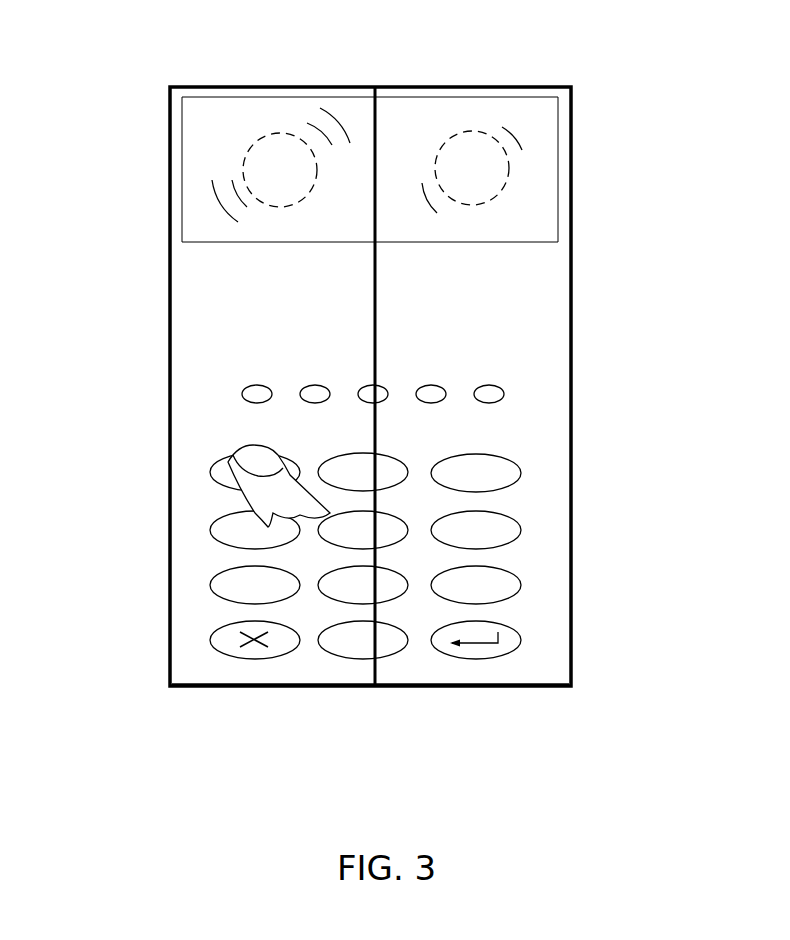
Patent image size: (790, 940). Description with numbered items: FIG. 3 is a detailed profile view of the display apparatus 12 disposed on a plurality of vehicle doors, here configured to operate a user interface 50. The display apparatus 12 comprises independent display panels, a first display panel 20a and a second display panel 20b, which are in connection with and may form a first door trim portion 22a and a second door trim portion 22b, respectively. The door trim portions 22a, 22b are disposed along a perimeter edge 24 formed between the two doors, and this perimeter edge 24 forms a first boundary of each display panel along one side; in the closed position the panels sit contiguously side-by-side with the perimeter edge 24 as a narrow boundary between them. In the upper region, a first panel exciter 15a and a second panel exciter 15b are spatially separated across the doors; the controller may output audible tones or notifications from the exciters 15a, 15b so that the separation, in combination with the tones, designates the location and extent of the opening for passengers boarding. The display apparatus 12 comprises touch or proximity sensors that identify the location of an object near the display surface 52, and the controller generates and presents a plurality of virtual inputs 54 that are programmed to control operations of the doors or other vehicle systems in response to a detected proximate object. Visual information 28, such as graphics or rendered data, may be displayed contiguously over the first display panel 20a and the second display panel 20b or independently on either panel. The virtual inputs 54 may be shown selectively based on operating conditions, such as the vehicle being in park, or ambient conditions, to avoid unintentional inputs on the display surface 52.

The display apparatus 12 is at (372, 374).
The first panel exciter 15a is at (248, 153).
The second panel exciter 15b is at (508, 173).
The first display panel 20a is at (183, 457).
The second display panel 20b is at (543, 358).
The first door trim portion 22a is at (148, 360).
The second door trim portion 22b is at (587, 430).
The perimeter edge 24 is at (395, 685).
The visual information 28 is at (365, 596).
The user interface 50 is at (535, 662).
The display surface 52 is at (542, 490).
The virtual inputs 54 is at (340, 648).